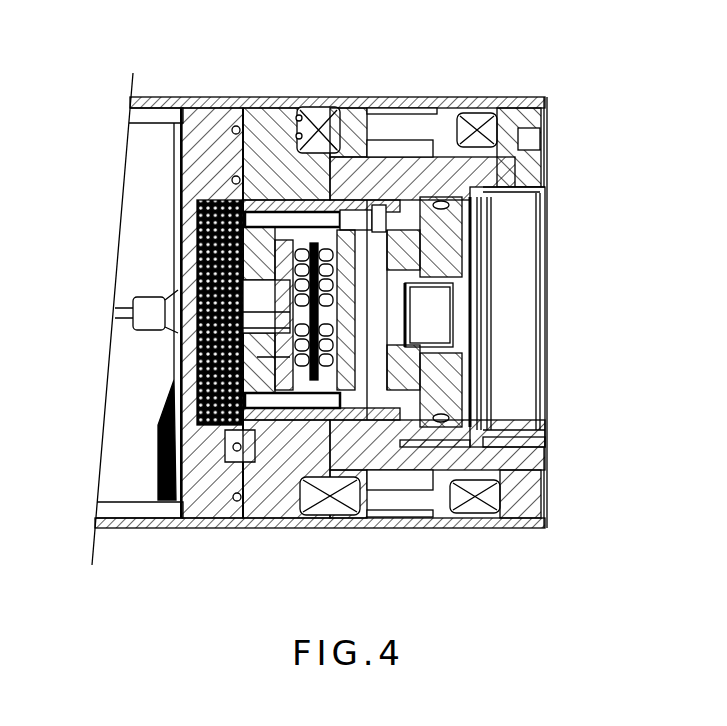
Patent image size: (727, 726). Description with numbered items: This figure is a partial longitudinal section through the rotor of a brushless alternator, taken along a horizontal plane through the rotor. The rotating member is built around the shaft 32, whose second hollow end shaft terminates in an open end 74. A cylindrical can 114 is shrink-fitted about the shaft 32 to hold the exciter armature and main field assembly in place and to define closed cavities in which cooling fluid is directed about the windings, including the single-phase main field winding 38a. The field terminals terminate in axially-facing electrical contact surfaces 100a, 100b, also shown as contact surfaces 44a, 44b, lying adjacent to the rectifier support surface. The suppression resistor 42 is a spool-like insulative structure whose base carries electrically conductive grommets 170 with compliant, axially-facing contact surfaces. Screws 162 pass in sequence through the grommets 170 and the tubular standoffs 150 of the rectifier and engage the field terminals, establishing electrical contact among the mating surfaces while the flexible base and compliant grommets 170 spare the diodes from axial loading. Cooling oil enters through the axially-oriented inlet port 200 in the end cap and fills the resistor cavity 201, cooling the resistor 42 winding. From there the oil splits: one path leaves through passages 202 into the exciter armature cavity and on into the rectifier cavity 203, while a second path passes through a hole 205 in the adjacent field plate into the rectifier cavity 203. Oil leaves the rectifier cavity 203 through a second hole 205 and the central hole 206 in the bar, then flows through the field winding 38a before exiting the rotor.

The shaft 32 is at (243, 183).
The electrical contact surface of field terminal 44a is at (132, 97).
The electrical contact surface of field terminal 44b is at (167, 460).
The electrical contact surface of field terminal 100a is at (243, 180).
The electrical contact surface of field terminal 100b is at (210, 480).
The tubular standoff 150 is at (363, 123).
The screw 162 is at (462, 98).
The cylindrical can 114 is at (502, 98).
The main field winding 38a is at (198, 205).
The hole in field plate 205 is at (197, 303).
The central hole in bar 206 is at (265, 325).
The rectifier cavity 203 is at (200, 355).
The resistor cavity 201 is at (407, 231).
The oil inlet port 200 is at (443, 302).
The passages 202 is at (483, 433).
The open end of shaft 74 is at (622, 318).
The suppression resistor 42 is at (357, 400).
The electrically conductive grommet 170 is at (397, 400).